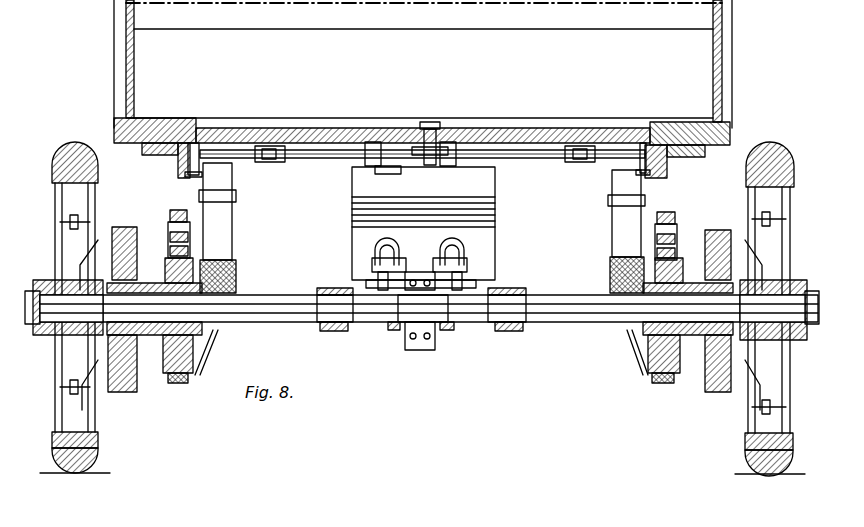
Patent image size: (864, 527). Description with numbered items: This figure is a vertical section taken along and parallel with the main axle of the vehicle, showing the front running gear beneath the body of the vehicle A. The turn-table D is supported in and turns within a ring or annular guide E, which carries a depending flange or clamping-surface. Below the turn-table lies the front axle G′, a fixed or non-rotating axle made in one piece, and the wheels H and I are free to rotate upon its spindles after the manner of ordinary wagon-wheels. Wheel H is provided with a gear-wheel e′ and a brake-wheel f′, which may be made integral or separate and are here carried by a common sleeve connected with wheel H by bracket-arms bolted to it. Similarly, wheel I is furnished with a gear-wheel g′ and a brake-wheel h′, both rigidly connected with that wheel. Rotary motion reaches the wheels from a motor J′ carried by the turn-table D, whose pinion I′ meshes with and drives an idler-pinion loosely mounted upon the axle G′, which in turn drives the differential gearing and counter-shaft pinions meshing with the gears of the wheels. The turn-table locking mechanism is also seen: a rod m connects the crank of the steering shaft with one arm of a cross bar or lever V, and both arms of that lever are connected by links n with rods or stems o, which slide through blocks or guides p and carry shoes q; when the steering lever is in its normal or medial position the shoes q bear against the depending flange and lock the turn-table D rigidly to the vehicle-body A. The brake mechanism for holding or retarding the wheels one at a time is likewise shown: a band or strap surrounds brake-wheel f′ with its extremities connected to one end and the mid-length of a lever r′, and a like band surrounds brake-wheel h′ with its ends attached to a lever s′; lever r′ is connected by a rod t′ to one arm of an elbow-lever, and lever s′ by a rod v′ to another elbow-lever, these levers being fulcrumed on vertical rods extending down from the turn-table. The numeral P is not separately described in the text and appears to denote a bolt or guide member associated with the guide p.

The body of the vehicle A is at (732, 118).
The turn-table D is at (566, 128).
The ring or annular guide E is at (658, 122).
The blocks or guides p is at (202, 128).
The bolt P is at (640, 143).
The shoes q is at (178, 170).
The links n is at (326, 160).
The rods or stems o is at (262, 162).
The rod m is at (388, 168).
The cross bar or lever V is at (449, 160).
The front axle G′ is at (300, 296).
The motor J′ is at (423, 228).
The pinion I′ is at (420, 352).
The wheel H is at (98, 445).
The wheel I is at (744, 440).
The gear-wheel e′ is at (154, 298).
The brake-wheel f′ is at (165, 250).
The rod t′ is at (172, 214).
The lever r′ is at (186, 232).
The brake-wheel h′ is at (705, 240).
The gear-wheel g′ is at (706, 390).
The rod v′ is at (662, 212).
The lever s′ is at (676, 236).